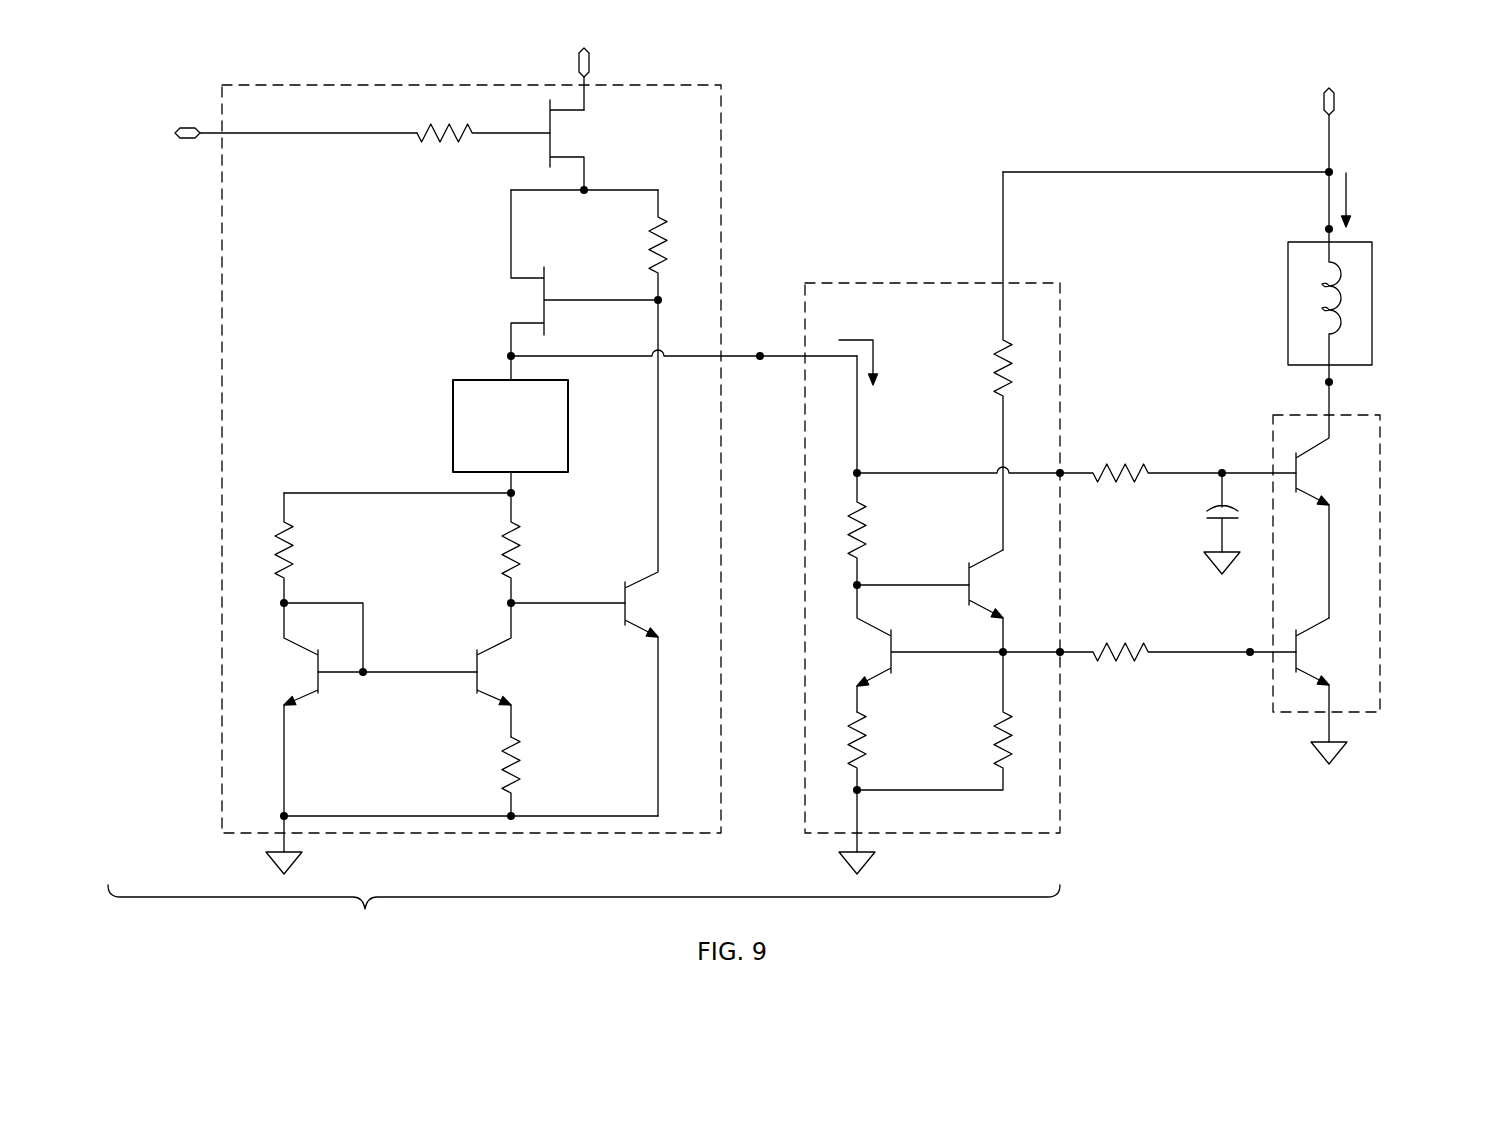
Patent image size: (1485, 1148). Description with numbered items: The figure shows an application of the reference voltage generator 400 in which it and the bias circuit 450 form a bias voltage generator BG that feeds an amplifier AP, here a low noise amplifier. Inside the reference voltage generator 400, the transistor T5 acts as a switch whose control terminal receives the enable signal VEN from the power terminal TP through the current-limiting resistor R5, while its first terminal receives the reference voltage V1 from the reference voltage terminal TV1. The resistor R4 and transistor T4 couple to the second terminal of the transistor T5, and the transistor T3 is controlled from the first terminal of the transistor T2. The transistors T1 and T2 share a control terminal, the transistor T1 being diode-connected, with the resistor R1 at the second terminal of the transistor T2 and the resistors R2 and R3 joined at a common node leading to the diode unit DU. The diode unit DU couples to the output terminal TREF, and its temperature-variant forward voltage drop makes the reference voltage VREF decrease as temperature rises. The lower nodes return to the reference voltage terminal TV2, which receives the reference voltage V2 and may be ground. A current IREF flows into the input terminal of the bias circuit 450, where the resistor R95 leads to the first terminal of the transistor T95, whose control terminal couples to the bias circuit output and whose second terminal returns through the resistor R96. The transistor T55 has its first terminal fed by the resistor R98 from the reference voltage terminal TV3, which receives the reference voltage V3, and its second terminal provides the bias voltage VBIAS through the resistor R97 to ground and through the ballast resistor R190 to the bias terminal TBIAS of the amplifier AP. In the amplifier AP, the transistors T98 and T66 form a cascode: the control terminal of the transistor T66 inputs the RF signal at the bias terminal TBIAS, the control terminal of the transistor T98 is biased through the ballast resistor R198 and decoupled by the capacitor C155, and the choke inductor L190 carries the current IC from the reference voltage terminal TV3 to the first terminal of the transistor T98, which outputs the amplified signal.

The reference voltage generator 400 is at (723, 183).
The bias circuit 450 is at (1062, 335).
The amplifier AP is at (1382, 555).
The bias voltage generator BG is at (584, 916).
The diode unit DU is at (452, 428).
The resistor R1 is at (529, 776).
The resistor R2 is at (265, 548).
The resistor R3 is at (529, 548).
The resistor R4 is at (676, 245).
The resistor R5 is at (483, 119).
The transistor T1 is at (287, 709).
The transistor T2 is at (509, 670).
The transistor T3 is at (657, 558).
The transistor T4 is at (569, 273).
The transistor T5 is at (584, 145).
The transistor T95 is at (910, 648).
The transistor T55 is at (1009, 601).
The resistor R95 is at (884, 529).
The resistor R96 is at (883, 751).
The resistor R97 is at (934, 721).
The resistor R98 is at (976, 361).
The resistor R198 is at (1178, 458).
The resistor R190 is at (1178, 638).
The capacitor C155 is at (1190, 523).
The transistor T98 is at (1336, 500).
The transistor T66 is at (1336, 680).
The inductor L190 is at (1338, 298).
The power terminal TP is at (190, 128).
The reference voltage terminal TV1 is at (592, 62).
The reference voltage terminal TV2 is at (1337, 752).
The reference voltage terminal TV3 is at (1336, 100).
The output terminal TREF is at (760, 350).
The bias terminal TBIAS is at (1246, 658).
The reference voltage V1 is at (564, 62).
The reference voltage V2 is at (301, 851).
The reference voltage V3 is at (1329, 85).
The enable signal VEN is at (267, 134).
The reference voltage VREF is at (766, 362).
The bias voltage VBIAS is at (1077, 655).
The current IREF is at (879, 362).
The current IC is at (1358, 200).